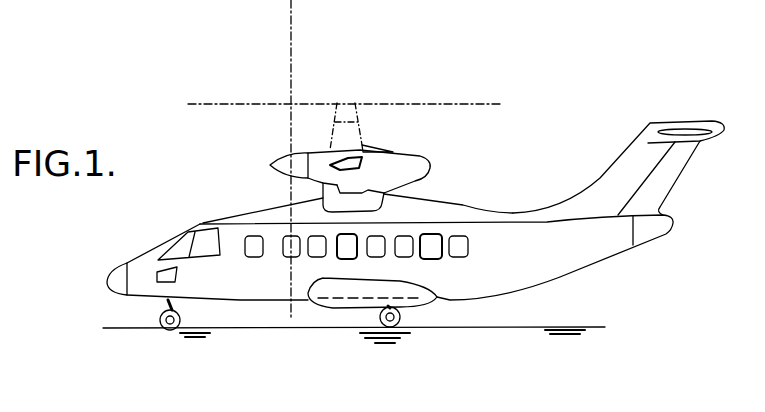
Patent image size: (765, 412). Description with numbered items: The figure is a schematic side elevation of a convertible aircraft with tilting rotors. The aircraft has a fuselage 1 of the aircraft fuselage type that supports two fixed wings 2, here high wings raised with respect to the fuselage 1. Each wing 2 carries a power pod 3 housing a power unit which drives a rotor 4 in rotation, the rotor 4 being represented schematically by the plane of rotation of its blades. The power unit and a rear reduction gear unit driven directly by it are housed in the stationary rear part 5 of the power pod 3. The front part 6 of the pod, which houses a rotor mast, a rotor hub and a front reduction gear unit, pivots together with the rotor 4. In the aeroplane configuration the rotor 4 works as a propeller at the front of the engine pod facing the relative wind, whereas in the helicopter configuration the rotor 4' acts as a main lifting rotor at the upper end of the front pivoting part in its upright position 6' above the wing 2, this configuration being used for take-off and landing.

The fuselage 1 is at (265, 300).
The fixed wing 2 is at (393, 197).
The power pod 3 is at (370, 133).
The rotor 4 is at (260, 158).
The rotor in helicopter configuration 4' is at (347, 69).
The stationary rear part of the power pod 5 is at (397, 166).
The front part of the power pod 6 is at (258, 148).
The front pivoting part of the pod in upright position 6' is at (361, 94).